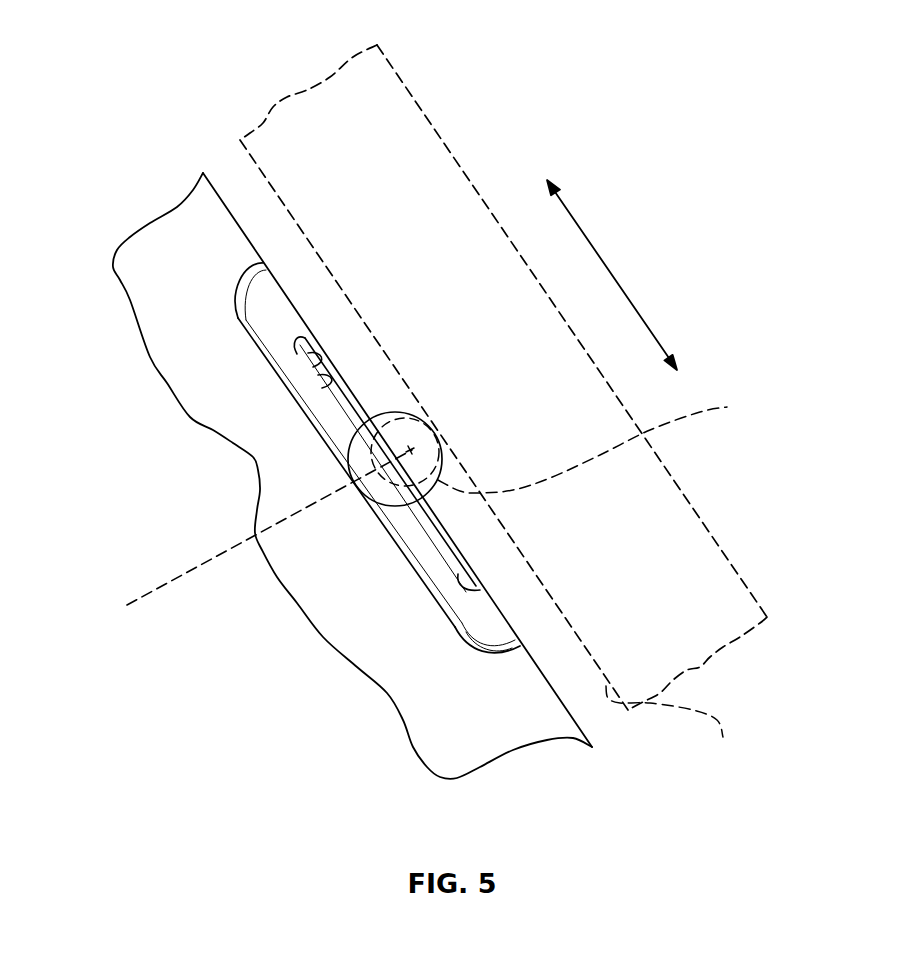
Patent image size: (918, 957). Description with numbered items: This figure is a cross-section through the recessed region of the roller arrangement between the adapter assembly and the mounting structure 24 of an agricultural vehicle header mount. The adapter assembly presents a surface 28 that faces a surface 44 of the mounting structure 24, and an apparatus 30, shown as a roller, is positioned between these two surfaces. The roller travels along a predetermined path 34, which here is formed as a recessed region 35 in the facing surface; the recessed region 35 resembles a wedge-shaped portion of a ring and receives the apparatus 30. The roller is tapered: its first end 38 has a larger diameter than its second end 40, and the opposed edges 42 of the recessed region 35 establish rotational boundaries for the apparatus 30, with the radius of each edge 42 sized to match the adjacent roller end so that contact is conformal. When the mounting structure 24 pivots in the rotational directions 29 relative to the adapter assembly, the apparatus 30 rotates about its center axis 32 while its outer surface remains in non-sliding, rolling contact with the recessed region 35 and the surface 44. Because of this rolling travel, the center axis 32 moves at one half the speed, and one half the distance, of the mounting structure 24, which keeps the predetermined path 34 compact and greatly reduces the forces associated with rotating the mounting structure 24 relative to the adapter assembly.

The mounting structure 24 is at (397, 72).
The surface 28 is at (463, 553).
The rotational directions 29 is at (617, 274).
The apparatus 30 is at (402, 412).
The center axis 32 is at (175, 578).
The predetermined path 34 is at (335, 378).
The recessed region 35 is at (308, 354).
The first end 38 is at (345, 443).
The second end 40 is at (570, 442).
The opposed edges 42 is at (486, 655).
The surface 44 is at (672, 727).